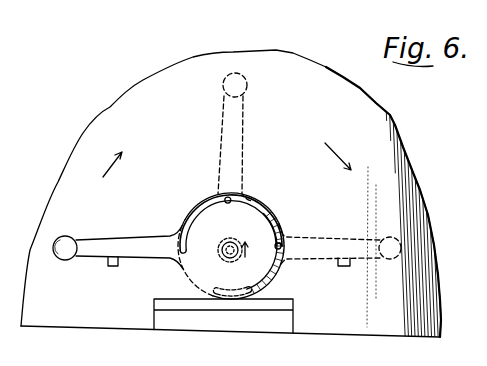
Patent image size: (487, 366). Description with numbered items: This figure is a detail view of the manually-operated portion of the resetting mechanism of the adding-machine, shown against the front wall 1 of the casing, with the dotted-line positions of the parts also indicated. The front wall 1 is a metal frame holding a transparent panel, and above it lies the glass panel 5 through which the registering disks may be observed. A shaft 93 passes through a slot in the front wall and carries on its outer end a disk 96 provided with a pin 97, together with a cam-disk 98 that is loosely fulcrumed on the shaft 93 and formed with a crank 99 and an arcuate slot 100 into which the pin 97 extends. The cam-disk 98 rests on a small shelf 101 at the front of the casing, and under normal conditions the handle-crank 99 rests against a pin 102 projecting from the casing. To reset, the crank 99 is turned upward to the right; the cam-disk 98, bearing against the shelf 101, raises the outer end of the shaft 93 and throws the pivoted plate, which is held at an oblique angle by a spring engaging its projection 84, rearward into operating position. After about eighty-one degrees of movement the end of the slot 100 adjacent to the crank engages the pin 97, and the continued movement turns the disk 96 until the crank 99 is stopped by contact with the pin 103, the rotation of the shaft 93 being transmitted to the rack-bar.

The front wall 1 is at (372, 127).
The glass panel 5 is at (177, 50).
The projection 84 is at (180, 6).
The shaft 93 is at (238, 241).
The disk 96 is at (186, 221).
The pin 97 is at (170, 259).
The cam-disk 98 is at (157, 235).
The crank 99 is at (90, 250).
The arcuate slot 100 is at (197, 203).
The shelf 101 is at (155, 300).
The pin 102 is at (113, 265).
The pin 103 is at (341, 266).